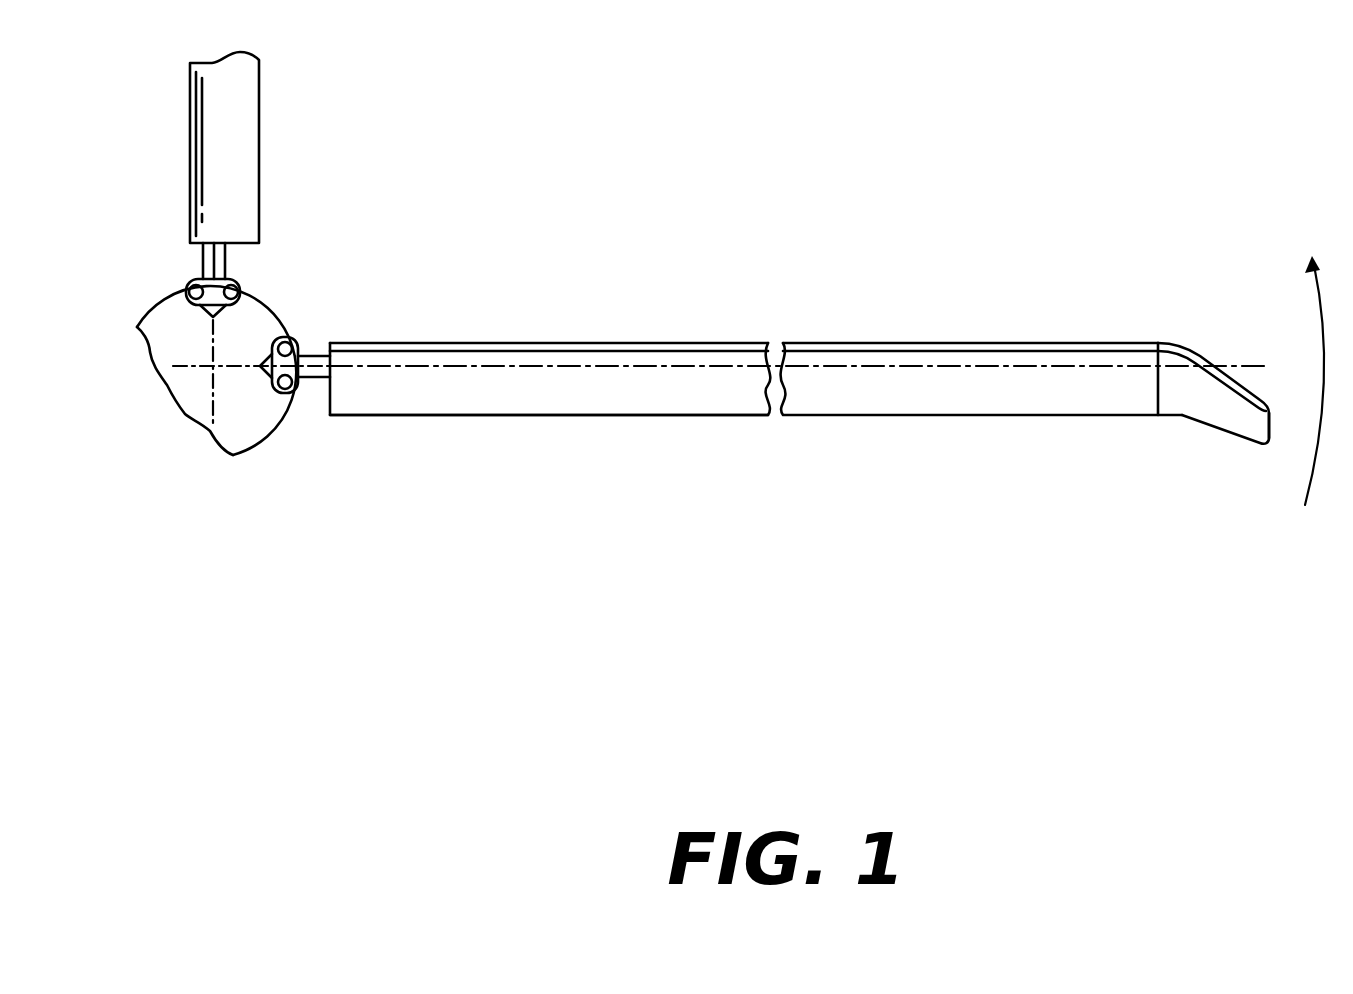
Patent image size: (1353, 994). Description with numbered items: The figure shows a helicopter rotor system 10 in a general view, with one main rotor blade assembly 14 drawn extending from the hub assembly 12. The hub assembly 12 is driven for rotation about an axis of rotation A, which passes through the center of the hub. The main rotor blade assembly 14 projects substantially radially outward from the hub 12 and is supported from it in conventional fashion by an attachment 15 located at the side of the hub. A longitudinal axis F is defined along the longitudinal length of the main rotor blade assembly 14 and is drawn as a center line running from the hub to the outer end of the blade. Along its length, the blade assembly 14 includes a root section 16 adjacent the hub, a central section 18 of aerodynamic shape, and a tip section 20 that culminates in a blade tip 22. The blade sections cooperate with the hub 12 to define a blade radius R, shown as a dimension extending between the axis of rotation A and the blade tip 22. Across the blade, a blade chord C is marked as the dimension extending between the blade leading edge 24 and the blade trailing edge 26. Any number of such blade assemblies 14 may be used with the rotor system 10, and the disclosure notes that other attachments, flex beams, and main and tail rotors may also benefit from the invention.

The helicopter rotor system 10 is at (362, 220).
The hub assembly 12 is at (253, 283).
The main rotor blade assembly 14 is at (832, 265).
The attachment 15 is at (295, 328).
The root section 16 is at (389, 380).
The central section 18 is at (896, 358).
The tip section 20 is at (1187, 310).
The blade tip 22 is at (1273, 422).
The blade leading edge 24 is at (548, 343).
The blade trailing edge 26 is at (586, 416).
The axis of rotation A is at (218, 368).
The longitudinal axis F is at (645, 366).
The blade chord C is at (942, 298).
The blade radius R is at (213, 425).